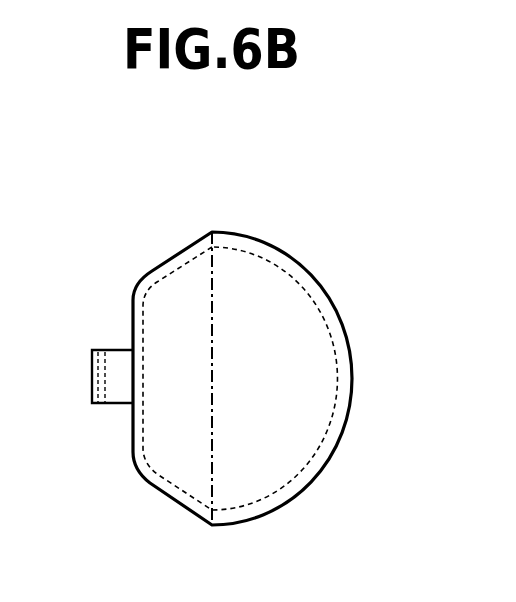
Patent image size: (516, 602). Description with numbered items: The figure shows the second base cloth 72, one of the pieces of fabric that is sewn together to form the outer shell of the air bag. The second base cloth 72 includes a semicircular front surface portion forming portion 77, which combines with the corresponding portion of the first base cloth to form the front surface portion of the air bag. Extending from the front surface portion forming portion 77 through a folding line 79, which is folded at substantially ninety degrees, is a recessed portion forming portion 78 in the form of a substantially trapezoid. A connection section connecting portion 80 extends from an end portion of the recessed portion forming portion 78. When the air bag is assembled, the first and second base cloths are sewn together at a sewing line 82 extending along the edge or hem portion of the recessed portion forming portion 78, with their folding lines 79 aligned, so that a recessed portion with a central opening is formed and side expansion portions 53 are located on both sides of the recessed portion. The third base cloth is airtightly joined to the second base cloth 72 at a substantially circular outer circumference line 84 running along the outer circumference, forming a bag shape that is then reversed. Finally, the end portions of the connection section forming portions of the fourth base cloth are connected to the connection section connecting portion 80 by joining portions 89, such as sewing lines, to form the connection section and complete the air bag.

The side expansion portions 53 is at (288, 378).
The second base cloth 72 is at (271, 242).
The front surface portion forming portion 77 is at (288, 353).
The recessed portion forming portion 78 is at (163, 313).
The folding line 79 is at (212, 290).
The connection section connecting portion 80 is at (118, 362).
The sewing line 82 is at (173, 488).
The outer circumference line 84 is at (277, 490).
The joining portion 89 is at (98, 377).